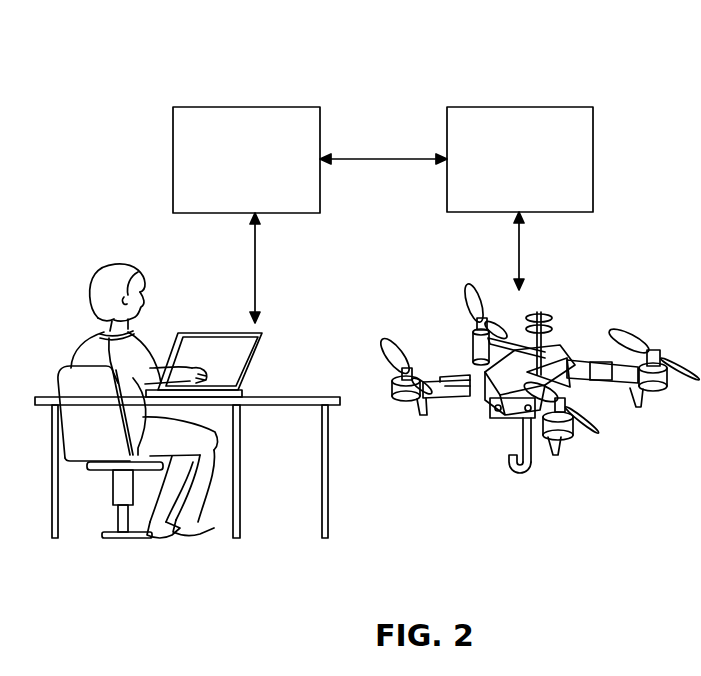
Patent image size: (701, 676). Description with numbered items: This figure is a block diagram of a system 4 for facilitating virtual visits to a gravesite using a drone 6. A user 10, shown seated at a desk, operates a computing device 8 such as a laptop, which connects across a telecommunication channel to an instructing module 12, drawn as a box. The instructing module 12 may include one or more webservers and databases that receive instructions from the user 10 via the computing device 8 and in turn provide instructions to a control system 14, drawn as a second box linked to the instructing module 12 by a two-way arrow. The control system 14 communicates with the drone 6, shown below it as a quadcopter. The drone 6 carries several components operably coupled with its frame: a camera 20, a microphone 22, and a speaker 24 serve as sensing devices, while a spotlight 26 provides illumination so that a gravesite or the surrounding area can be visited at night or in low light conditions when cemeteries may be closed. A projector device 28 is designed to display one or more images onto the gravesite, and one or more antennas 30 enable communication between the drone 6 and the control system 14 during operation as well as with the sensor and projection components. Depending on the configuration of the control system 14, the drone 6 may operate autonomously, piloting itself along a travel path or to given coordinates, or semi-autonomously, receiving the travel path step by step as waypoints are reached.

The system 4 is at (395, 169).
The drone 6 is at (538, 404).
The computing device 8 is at (215, 333).
The user 10 is at (93, 340).
The instructing module 12 is at (269, 107).
The control system 14 is at (540, 107).
The camera 20 is at (470, 405).
The microphone 22 is at (458, 405).
The speaker 24 is at (482, 412).
The spotlight 26 is at (543, 440).
The projector device 28 is at (475, 388).
The antenna 30 is at (550, 332).